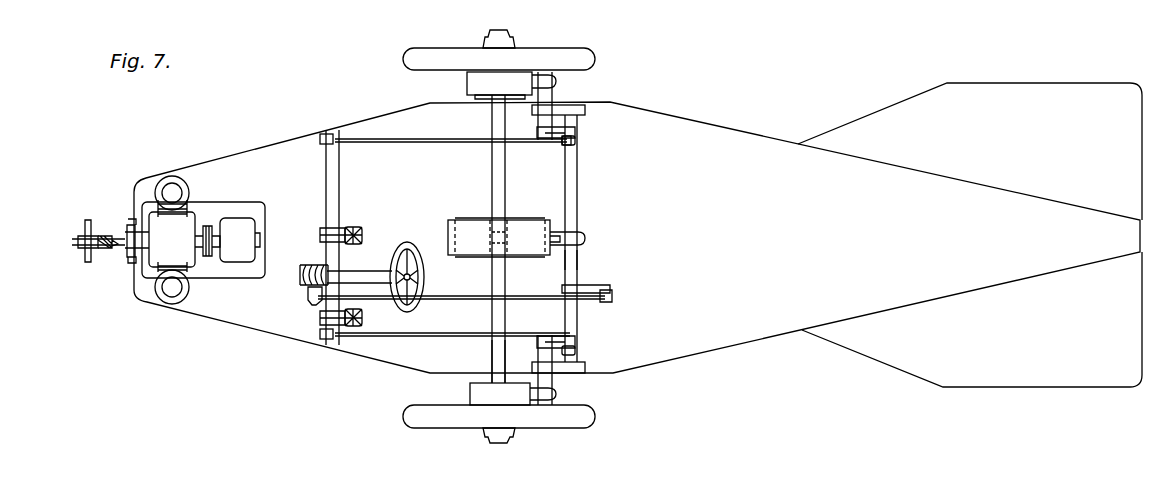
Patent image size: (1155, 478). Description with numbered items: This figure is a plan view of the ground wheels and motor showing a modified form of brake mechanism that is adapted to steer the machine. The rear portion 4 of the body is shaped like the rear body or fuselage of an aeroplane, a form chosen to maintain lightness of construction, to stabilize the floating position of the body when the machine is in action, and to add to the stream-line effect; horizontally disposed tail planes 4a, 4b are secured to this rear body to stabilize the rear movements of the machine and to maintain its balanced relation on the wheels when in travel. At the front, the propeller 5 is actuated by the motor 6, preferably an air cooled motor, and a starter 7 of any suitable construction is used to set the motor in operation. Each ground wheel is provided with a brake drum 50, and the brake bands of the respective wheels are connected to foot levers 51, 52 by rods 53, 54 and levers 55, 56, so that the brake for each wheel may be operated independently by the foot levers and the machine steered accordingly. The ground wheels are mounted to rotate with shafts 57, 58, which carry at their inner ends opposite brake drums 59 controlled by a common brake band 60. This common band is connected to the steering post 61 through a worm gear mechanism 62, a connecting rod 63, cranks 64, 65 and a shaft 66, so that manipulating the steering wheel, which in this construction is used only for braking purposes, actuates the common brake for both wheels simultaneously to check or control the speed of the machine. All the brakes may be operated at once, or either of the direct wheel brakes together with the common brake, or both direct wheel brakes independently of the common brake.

The rear portion of the body 4 is at (672, 137).
The tail plane 4a is at (943, 100).
The tail plane 4b is at (903, 345).
The propeller 5 is at (73, 239).
The motor 6 is at (173, 188).
The starter 7 is at (241, 218).
The brake drum 50 is at (473, 78).
The foot lever 51 is at (354, 228).
The foot lever 52 is at (360, 326).
The rod 53 is at (414, 143).
The rod 54 is at (405, 338).
The lever 55 is at (571, 132).
The lever 56 is at (577, 341).
The shaft 57 is at (486, 178).
The shaft 58 is at (491, 352).
The brake drum 59 is at (530, 206).
The common brake band 60 is at (449, 233).
The steering post 61 is at (367, 275).
The worm gear mechanism 62 is at (300, 282).
The connecting rod 63 is at (471, 299).
The crank 64 is at (305, 294).
The crank 65 is at (608, 289).
The shaft 66 is at (580, 259).